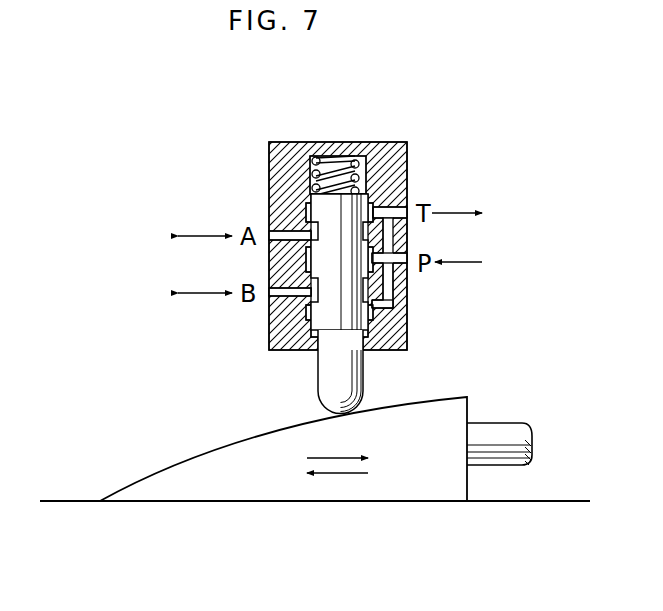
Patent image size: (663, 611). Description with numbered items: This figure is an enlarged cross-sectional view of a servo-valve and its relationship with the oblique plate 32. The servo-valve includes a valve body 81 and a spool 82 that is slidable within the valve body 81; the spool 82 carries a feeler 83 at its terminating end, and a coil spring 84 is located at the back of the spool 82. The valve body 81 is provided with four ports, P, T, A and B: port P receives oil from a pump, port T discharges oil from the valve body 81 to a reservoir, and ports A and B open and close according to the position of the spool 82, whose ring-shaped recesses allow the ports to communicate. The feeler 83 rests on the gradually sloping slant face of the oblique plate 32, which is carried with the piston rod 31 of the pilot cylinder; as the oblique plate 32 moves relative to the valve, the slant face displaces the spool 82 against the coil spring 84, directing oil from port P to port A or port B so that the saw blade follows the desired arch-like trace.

The valve body 81 is at (406, 187).
The spool 82 is at (322, 204).
The feeler 83 is at (328, 378).
The coil spring 84 is at (355, 158).
The piston rod 31 is at (492, 432).
The oblique plate 32 is at (198, 465).